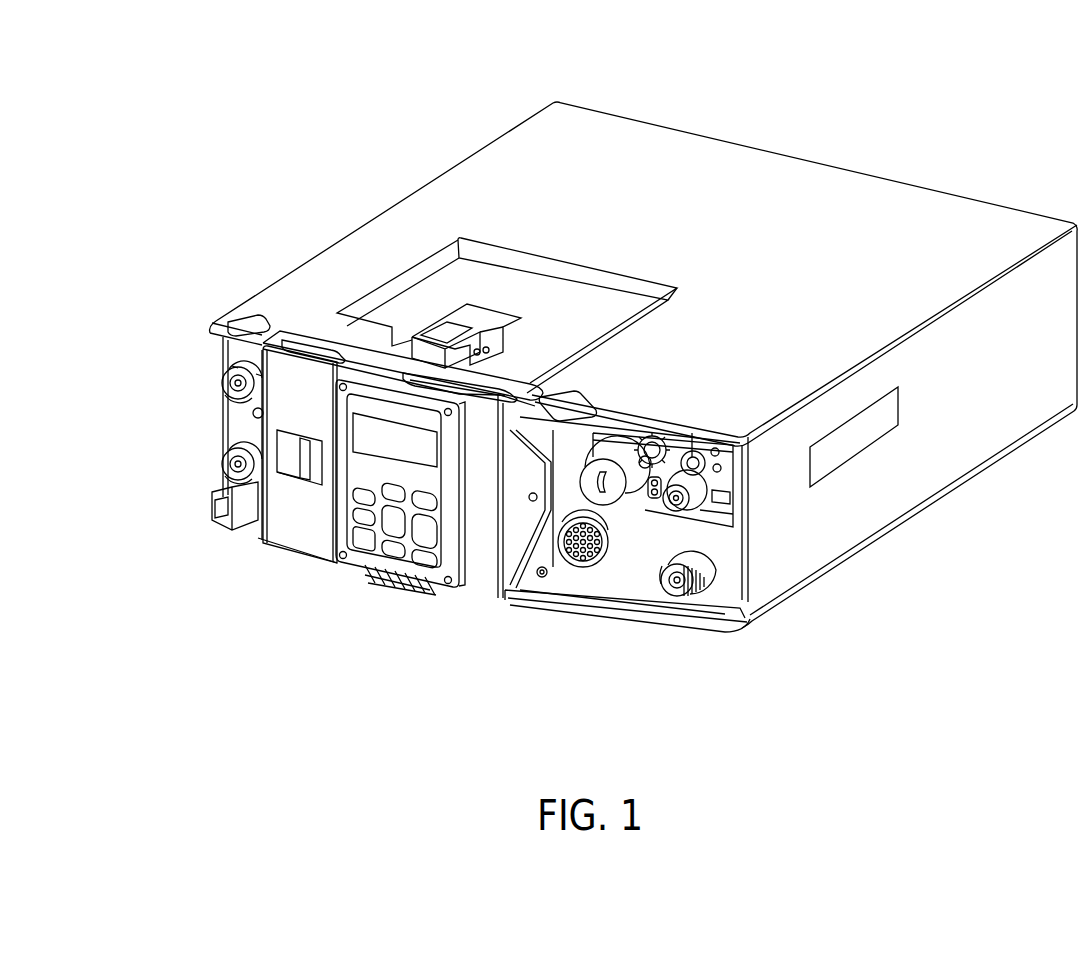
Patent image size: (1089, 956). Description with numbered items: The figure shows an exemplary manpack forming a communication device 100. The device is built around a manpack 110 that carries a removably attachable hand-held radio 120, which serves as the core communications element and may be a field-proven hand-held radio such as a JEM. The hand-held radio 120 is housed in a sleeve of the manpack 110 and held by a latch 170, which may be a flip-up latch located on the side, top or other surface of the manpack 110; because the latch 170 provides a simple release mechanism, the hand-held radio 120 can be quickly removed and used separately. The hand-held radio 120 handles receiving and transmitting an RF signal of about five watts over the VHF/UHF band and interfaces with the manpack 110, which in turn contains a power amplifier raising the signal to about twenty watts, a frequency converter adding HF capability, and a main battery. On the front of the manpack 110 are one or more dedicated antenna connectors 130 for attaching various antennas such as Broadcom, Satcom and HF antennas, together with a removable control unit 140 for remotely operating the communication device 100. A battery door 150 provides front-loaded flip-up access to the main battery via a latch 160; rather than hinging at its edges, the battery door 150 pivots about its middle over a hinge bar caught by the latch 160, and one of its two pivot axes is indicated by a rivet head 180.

The communication device 100 is at (188, 55).
The manpack 110 is at (700, 136).
The hand-held radio 120 is at (730, 495).
The antenna connectors 130 is at (223, 365).
The removable control unit 140 is at (372, 570).
The battery door 150 is at (275, 540).
The latch 160 is at (437, 318).
The latch 170 is at (865, 450).
The rivet head 180 is at (543, 577).